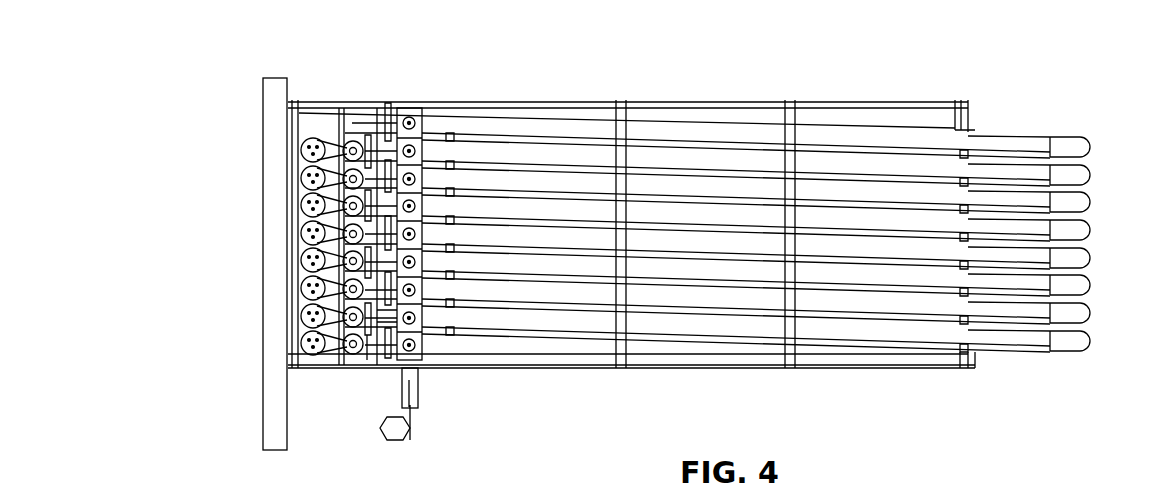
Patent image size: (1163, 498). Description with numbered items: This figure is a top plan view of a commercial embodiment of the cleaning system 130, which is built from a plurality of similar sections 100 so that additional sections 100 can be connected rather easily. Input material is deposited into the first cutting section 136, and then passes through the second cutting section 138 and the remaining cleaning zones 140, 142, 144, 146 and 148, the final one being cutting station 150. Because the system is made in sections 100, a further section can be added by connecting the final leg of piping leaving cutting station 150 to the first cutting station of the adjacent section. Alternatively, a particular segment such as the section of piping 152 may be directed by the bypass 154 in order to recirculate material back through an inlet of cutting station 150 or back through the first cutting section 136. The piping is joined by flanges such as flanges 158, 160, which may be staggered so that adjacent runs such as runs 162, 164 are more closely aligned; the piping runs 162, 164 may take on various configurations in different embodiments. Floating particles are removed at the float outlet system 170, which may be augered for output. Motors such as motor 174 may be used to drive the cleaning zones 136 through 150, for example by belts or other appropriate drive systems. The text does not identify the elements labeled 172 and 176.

The section 100 is at (988, 84).
The system 130 is at (978, 127).
The first cutting section 136 is at (353, 352).
The second cutting section 138 is at (303, 325).
The cleaning zone 140 is at (303, 297).
The cleaning zone 142 is at (303, 270).
The cleaning zone 144 is at (303, 243).
The cleaning zone 146 is at (303, 215).
The cleaning zone 148 is at (302, 188).
The cutting station 150 is at (303, 160).
The section of piping 152 is at (582, 130).
The bypass 154 is at (268, 98).
The flange 158 is at (372, 360).
The flange 160 is at (372, 316).
The run of piping 162 is at (1080, 340).
The run of piping 164 is at (1077, 310).
The float outlet system 170 is at (411, 104).
The adjustment rod 172 is at (418, 408).
The motor 174 is at (316, 352).
The fastener bars 176 is at (330, 144).